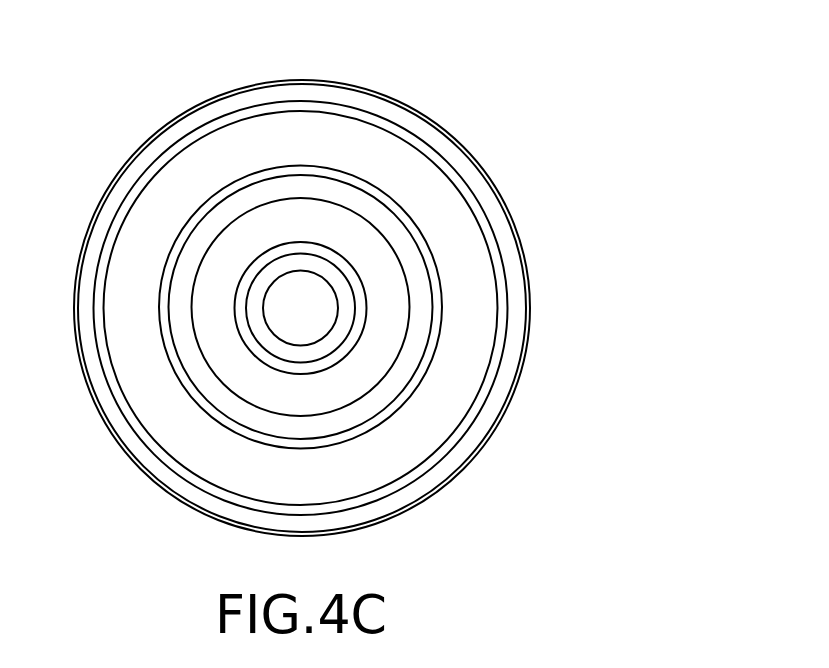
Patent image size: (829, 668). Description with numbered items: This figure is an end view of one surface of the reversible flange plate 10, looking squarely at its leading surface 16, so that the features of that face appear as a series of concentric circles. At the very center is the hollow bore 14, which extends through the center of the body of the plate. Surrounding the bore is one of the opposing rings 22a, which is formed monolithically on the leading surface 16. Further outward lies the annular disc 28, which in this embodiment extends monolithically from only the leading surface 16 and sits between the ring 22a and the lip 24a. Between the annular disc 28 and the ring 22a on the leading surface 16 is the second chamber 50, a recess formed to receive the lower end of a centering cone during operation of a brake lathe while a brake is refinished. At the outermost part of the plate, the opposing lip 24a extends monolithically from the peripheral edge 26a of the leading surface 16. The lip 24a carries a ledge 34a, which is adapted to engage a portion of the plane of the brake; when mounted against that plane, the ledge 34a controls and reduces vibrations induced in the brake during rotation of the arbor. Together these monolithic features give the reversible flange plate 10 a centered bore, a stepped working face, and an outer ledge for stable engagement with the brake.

The reversible flange plate 10 is at (575, 108).
The hollow bore 14 is at (322, 293).
The leading surface 16 is at (153, 467).
The opposing ring 22a is at (332, 273).
The opposing lip 24a is at (513, 329).
The peripheral edge 26a is at (500, 408).
The annular disc 28 is at (248, 183).
The ledge 34a is at (347, 100).
The second chamber 50 is at (358, 376).